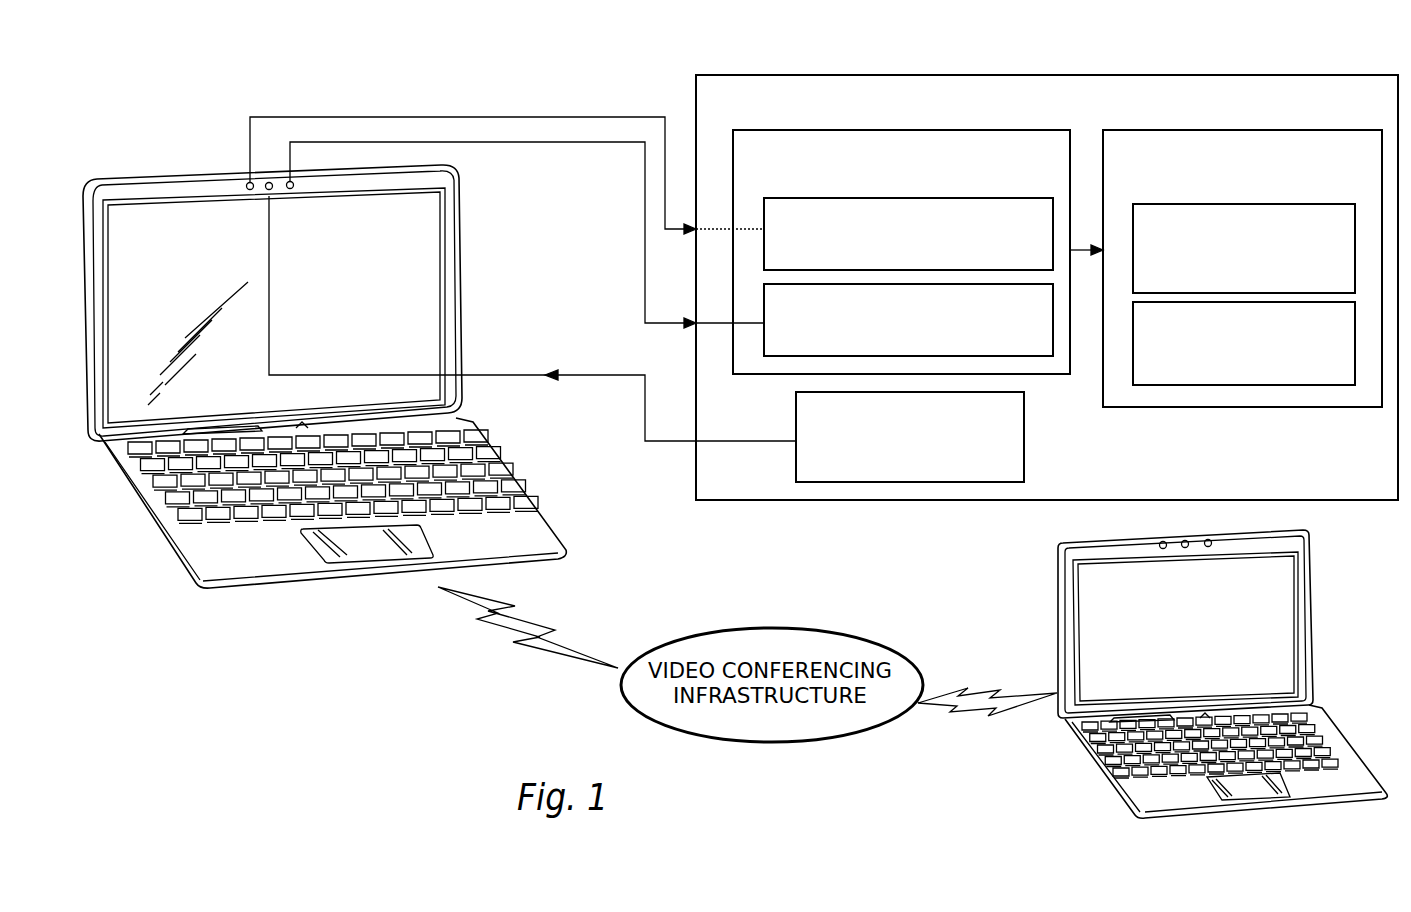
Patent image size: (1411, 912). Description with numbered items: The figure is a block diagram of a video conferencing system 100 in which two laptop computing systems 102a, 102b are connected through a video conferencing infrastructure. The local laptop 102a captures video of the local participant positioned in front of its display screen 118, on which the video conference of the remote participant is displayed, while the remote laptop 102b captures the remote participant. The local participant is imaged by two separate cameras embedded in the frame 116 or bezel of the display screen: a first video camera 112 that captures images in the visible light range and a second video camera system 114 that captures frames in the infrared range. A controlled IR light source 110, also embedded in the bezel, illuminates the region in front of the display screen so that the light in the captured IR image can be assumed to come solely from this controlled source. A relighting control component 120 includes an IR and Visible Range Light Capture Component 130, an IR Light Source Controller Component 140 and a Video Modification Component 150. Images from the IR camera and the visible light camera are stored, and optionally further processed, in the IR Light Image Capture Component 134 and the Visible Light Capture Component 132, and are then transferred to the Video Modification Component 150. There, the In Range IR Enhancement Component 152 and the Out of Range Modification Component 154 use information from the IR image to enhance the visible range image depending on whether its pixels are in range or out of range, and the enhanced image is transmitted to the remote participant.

The video conferencing system 100 is at (236, 715).
The computing system 102a is at (470, 228).
The computing system 102b is at (1037, 605).
The IR light source 110 is at (268, 189).
The first video camera 112 is at (293, 186).
The second video camera system 114 is at (248, 186).
The frame 116 is at (452, 345).
The display screen 118 is at (387, 308).
The relighting control component 120 is at (1262, 114).
The IR and Visible Range Light Capture Component 130 is at (1065, 156).
The Visible Light Capture Component 132 is at (1043, 230).
The IR Light Image Capture Component 134 is at (1042, 317).
The IR Light Source Controller Component 140 is at (1003, 464).
The Video Modification Component 150 is at (1342, 191).
The In Range IR Enhancement Component 152 is at (1337, 286).
The Out of Range Modification Component 154 is at (1335, 381).